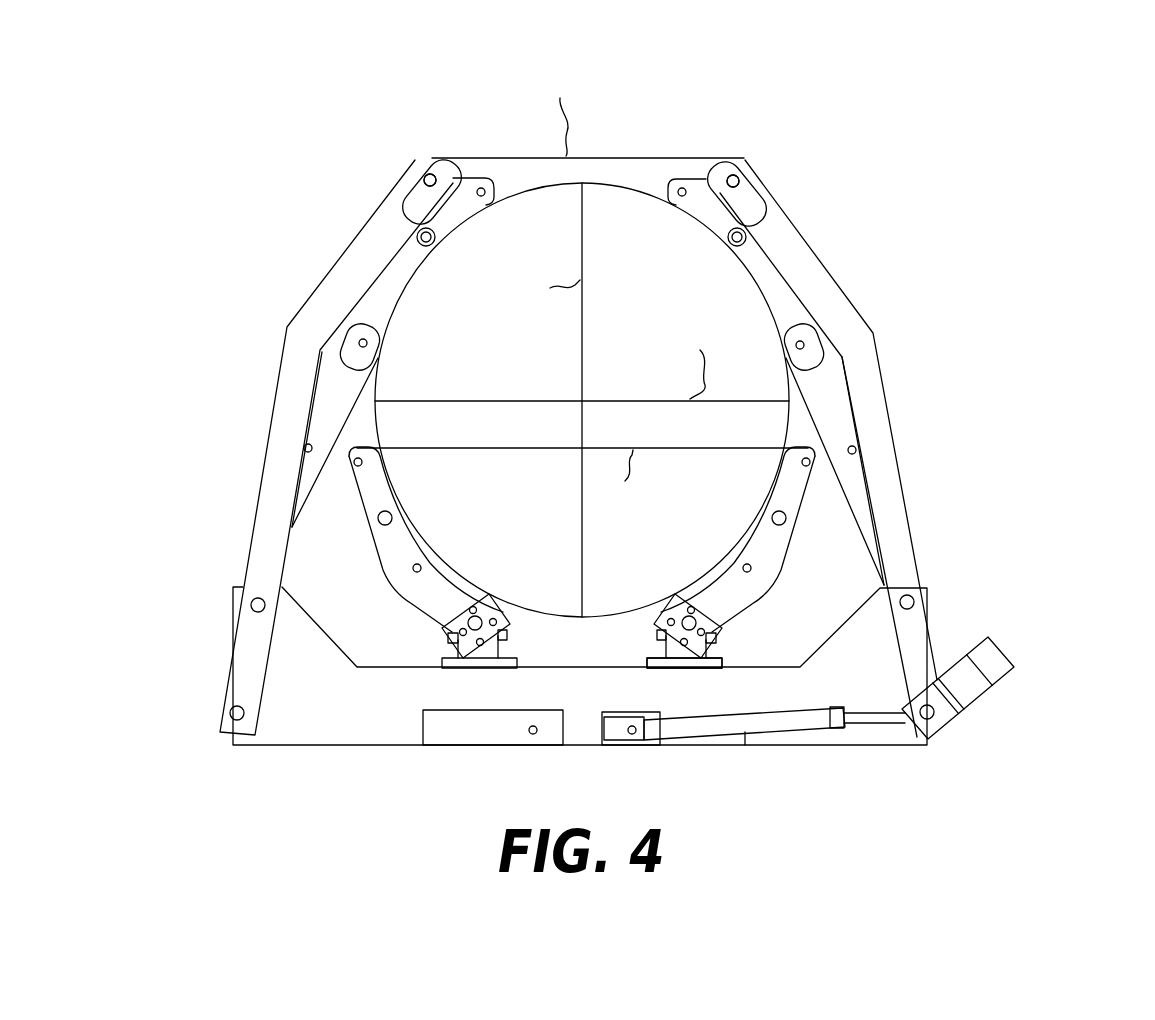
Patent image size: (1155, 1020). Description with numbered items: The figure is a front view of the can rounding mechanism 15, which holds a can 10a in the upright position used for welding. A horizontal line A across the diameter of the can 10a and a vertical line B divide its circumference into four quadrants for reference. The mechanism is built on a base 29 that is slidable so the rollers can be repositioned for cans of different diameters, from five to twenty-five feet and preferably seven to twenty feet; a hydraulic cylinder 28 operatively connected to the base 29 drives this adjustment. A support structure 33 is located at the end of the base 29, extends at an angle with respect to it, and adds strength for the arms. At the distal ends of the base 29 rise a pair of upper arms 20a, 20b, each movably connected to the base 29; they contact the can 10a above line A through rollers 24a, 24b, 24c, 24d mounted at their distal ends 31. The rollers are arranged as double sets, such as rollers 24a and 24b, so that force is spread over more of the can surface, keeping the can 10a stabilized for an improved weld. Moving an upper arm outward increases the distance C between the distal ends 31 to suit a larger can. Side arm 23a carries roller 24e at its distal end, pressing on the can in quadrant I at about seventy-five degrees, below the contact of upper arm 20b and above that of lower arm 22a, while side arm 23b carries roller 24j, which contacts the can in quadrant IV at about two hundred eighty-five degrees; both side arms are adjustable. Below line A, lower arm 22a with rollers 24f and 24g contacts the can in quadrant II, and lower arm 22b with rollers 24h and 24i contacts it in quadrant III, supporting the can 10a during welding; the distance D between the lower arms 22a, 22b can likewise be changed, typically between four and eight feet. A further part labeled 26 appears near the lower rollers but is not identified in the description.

The can rounding mechanism 15 is at (1032, 346).
The can 10a is at (462, 342).
The upper arm 20a is at (298, 328).
The upper arm 20b is at (806, 267).
The lower arm 22a is at (780, 565).
The lower arm 22b is at (376, 532).
The side arm 23a is at (830, 397).
The side arm 23b is at (301, 427).
The roller 24a is at (428, 210).
The roller 24b is at (491, 177).
The roller 24c is at (681, 180).
The roller 24d is at (753, 232).
The roller 24e is at (812, 343).
The roller 24f is at (782, 497).
The roller 24g is at (677, 600).
The roller 24h is at (483, 604).
The roller 24i is at (383, 497).
The roller 24j is at (362, 327).
The support pad 26 is at (655, 630).
The hydraulic cylinder 28 is at (792, 730).
The base 29 is at (352, 697).
The distal ends of the upper arms 31 is at (427, 160).
The support structure 33 is at (995, 668).